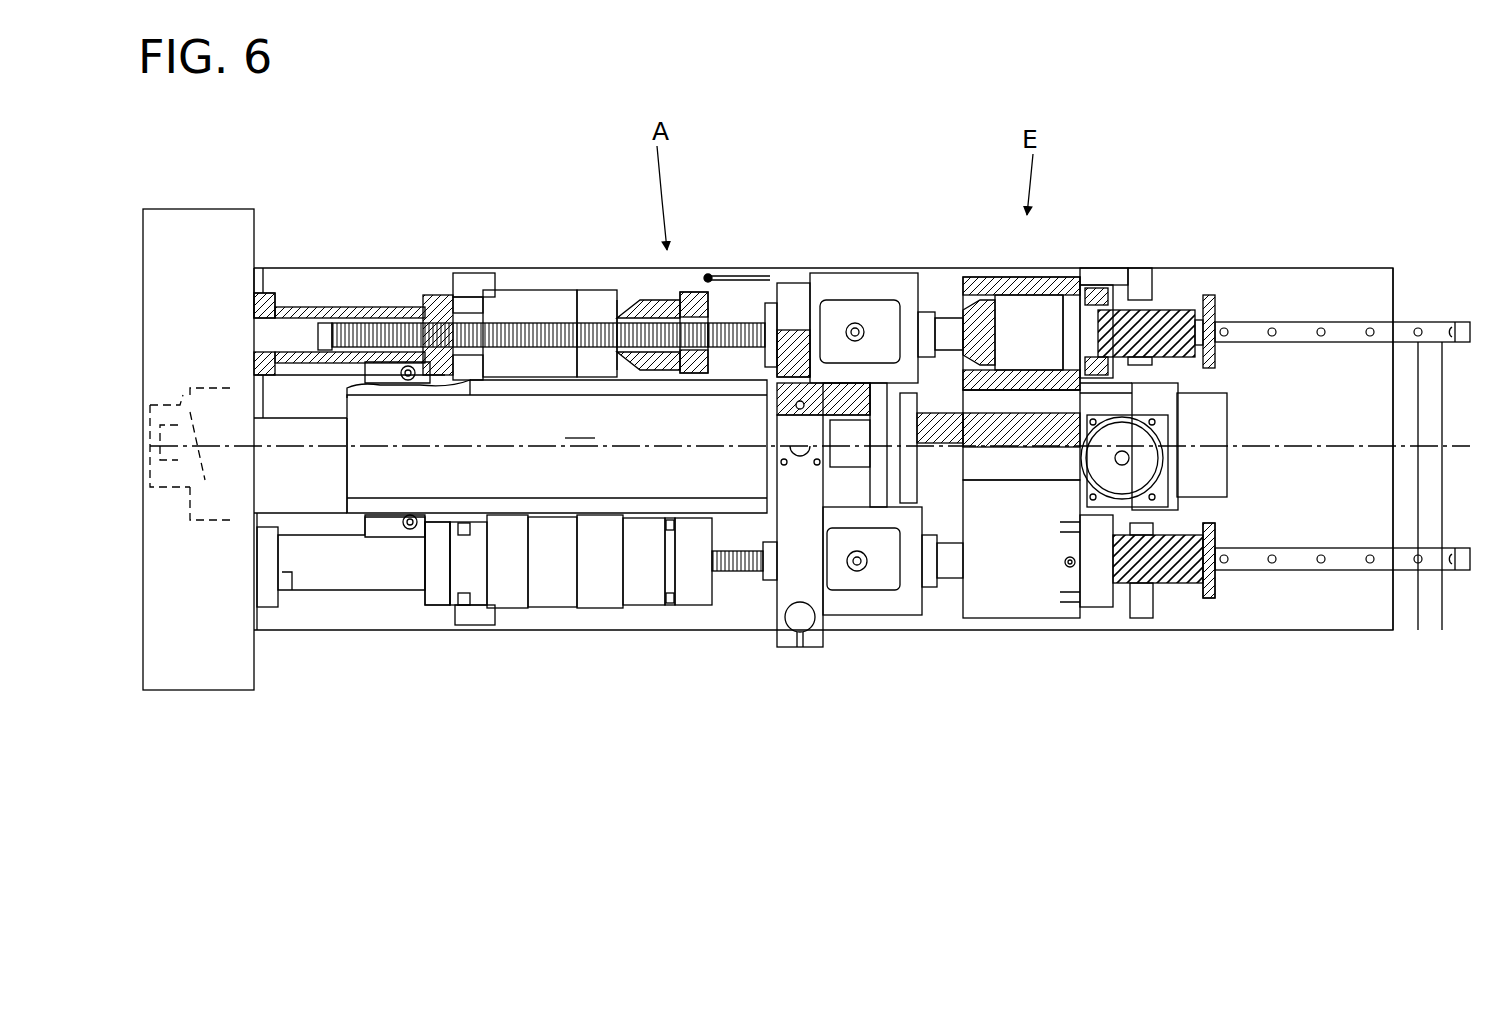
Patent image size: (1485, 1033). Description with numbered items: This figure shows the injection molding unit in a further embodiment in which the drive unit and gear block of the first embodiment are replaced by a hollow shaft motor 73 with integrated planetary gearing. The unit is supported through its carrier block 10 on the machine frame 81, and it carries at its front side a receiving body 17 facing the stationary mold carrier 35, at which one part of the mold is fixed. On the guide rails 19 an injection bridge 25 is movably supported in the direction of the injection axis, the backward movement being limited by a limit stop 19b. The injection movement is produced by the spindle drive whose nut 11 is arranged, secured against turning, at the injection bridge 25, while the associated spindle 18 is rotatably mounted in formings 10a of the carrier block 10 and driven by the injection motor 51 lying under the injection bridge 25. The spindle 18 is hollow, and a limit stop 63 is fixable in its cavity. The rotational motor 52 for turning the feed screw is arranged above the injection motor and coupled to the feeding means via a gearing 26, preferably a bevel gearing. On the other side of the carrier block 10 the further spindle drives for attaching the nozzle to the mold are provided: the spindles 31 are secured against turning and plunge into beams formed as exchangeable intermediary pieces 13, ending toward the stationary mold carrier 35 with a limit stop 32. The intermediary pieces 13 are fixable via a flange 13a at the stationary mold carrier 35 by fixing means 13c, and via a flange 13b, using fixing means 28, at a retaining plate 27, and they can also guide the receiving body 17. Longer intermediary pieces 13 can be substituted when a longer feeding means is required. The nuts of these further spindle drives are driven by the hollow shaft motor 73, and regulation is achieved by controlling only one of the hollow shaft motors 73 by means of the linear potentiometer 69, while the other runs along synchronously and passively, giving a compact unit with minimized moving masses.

The carrier block 10 is at (840, 280).
The formings of the carrier block 10a is at (893, 578).
The nut 11 is at (1035, 330).
The intermediary pieces 13 is at (300, 312).
The flange 13a is at (268, 292).
The flange 13b is at (432, 577).
The fixing means 13c is at (287, 585).
The receiving body 17 is at (557, 446).
The spindle 18 is at (1150, 310).
The guide rails 19 is at (1305, 330).
The limit stop 19b is at (1465, 330).
The injection bridge 25 is at (1016, 335).
The gearing 26 is at (1140, 405).
The retaining plate 27 is at (698, 300).
The fixing means 28 is at (461, 592).
The spindles 31 is at (403, 326).
The limit stop 32 is at (340, 322).
The stationary mold carrier 35 is at (228, 222).
The injection motor 51 is at (1200, 415).
The rotational motor 52 is at (1142, 467).
The limit stop 63 is at (1210, 595).
The linear potentiometer 69 is at (932, 270).
The hollow shaft motor 73 is at (515, 298).
The machine frame 81 is at (1357, 600).